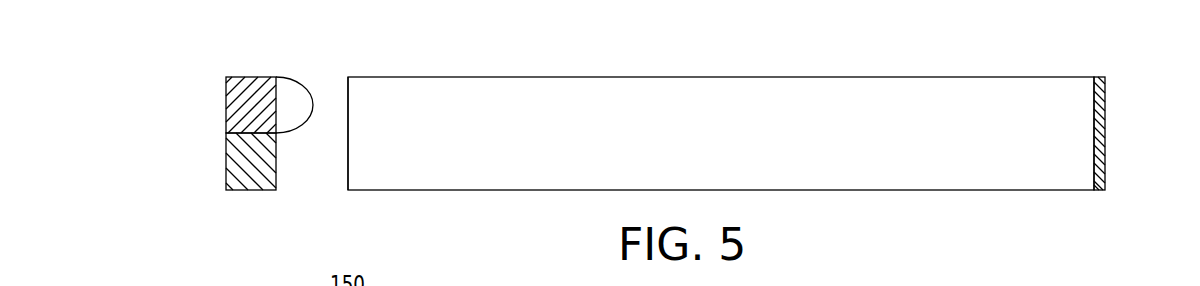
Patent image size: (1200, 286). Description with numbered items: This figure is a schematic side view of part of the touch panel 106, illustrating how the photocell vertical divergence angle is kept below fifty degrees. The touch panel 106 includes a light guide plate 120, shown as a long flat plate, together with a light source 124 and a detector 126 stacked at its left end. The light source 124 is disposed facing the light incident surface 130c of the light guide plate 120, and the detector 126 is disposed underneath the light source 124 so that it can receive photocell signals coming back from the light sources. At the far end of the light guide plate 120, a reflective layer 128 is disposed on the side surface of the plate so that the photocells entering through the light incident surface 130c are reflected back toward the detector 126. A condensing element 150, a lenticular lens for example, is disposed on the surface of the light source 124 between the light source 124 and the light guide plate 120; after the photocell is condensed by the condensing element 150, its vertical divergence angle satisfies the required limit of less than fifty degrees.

The light guide plate 120 is at (988, 90).
The light source 124 is at (238, 100).
The detector 126 is at (238, 167).
The reflective layer 128 is at (1100, 138).
The light incident surface 130c is at (348, 121).
The condensing element 150 is at (295, 93).
The touch panel 106 is at (1153, 234).